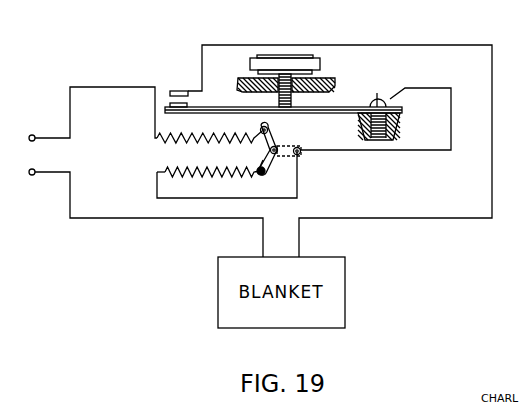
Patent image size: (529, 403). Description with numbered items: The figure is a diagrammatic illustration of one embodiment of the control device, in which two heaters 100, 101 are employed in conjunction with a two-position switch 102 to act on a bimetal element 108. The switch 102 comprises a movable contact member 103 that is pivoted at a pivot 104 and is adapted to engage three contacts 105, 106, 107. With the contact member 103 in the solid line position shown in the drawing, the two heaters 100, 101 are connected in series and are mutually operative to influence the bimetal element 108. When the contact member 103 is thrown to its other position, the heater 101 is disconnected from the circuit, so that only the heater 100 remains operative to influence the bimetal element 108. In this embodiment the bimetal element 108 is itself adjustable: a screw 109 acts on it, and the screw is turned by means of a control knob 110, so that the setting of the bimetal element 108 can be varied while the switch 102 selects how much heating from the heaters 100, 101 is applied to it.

The heater 100 is at (177, 140).
The heater 101 is at (208, 180).
The two-position switch 102 is at (277, 152).
The movable contact member 103 is at (266, 174).
The pivot 104 is at (277, 148).
The contact 105 is at (258, 168).
The contact 106 is at (271, 125).
The contact 107 is at (301, 150).
The bimetal element 108 is at (254, 110).
The screw 109 is at (293, 102).
The control knob 110 is at (290, 63).